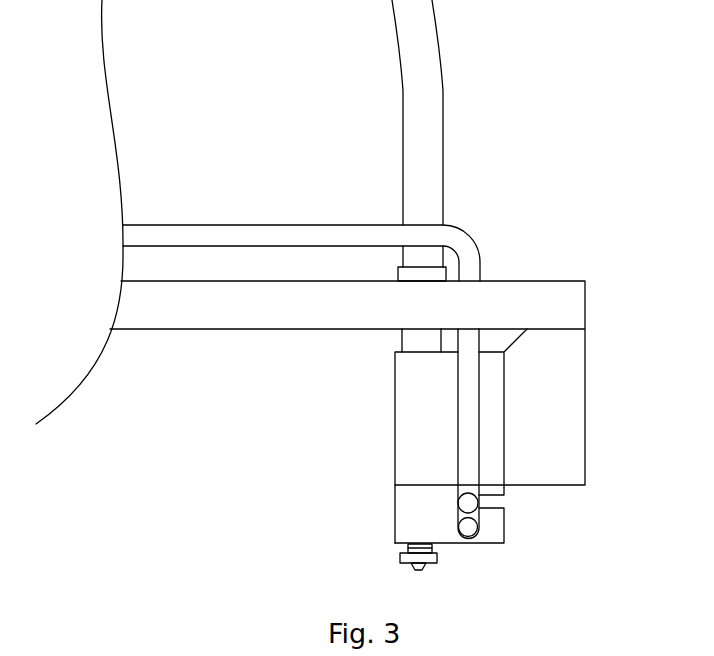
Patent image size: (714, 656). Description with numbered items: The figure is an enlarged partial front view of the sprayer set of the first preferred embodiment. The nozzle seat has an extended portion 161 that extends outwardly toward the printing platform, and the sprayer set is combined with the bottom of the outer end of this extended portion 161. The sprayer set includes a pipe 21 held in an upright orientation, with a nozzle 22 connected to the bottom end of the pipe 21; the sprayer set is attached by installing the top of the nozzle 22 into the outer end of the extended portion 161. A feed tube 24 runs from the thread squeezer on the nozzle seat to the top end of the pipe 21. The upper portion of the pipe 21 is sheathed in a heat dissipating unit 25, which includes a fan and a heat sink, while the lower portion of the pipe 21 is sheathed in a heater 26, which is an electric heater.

The feed tube 24 is at (440, 95).
The extended portion 161 is at (158, 317).
The pipe 21 is at (405, 340).
The heat dissipating unit 25 is at (408, 445).
The heater 26 is at (500, 528).
The nozzle 22 is at (435, 562).